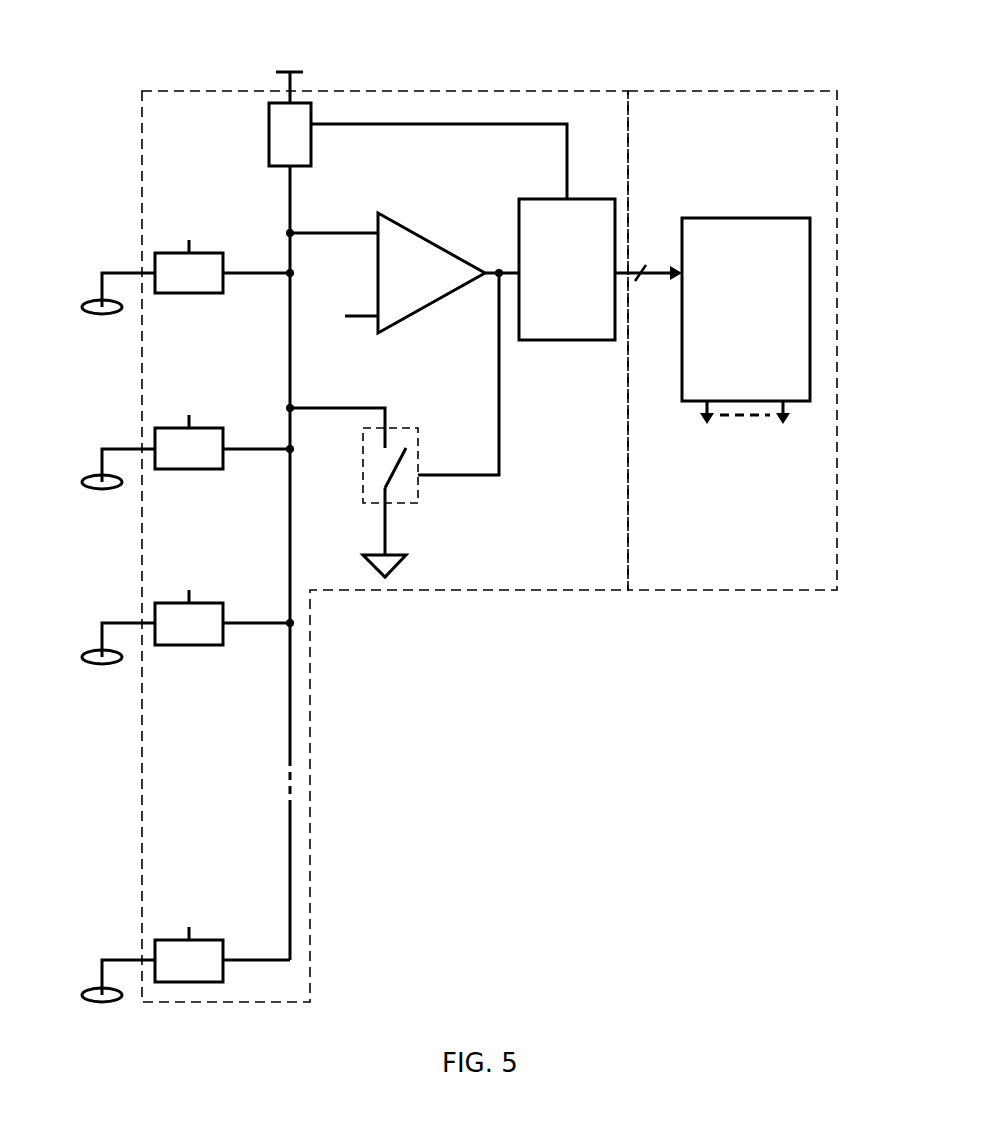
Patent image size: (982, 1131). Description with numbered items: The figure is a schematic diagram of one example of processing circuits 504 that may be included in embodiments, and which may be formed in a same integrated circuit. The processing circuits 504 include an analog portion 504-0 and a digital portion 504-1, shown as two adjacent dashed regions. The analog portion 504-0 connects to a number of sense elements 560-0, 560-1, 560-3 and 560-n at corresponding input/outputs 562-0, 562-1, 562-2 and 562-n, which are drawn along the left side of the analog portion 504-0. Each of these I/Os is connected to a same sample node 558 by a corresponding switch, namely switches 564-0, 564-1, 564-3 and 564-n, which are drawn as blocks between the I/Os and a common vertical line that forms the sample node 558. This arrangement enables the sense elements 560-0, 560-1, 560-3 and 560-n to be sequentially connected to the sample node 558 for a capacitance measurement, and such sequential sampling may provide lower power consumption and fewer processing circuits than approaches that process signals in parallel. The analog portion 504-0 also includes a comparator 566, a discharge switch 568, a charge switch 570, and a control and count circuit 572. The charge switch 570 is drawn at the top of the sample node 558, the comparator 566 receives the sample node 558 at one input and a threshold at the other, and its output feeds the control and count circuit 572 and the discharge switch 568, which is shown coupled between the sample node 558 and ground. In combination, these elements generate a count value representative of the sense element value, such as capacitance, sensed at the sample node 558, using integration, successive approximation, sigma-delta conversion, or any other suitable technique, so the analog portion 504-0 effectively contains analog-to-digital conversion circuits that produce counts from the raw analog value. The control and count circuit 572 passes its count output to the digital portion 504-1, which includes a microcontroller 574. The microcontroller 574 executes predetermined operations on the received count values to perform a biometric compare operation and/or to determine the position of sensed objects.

The processing circuits 504 is at (642, 50).
The analog portion 504-0 is at (425, 91).
The digital portion 504-1 is at (706, 91).
The sample node 558 is at (292, 232).
The sense element 560-0 is at (84, 308).
The sense element 560-1 is at (84, 485).
The sense element 560-3 is at (84, 660).
The sense element 560-n is at (84, 998).
The input/output (I/O) 562-0 is at (152, 273).
The input/output (I/O) 562-1 is at (152, 449).
The input/output (I/O) 562-2 is at (152, 623).
The input/output (I/O) 562-n is at (152, 960).
The switch 564-0 is at (197, 293).
The switch 564-1 is at (197, 469).
The switch 564-3 is at (197, 645).
The switch 564-n is at (212, 968).
The comparator 566 is at (413, 240).
The discharge switch 568 is at (418, 490).
The charge switch 570 is at (305, 148).
The control and count circuit 572 is at (463, 232).
The microcontroller 574 is at (712, 333).